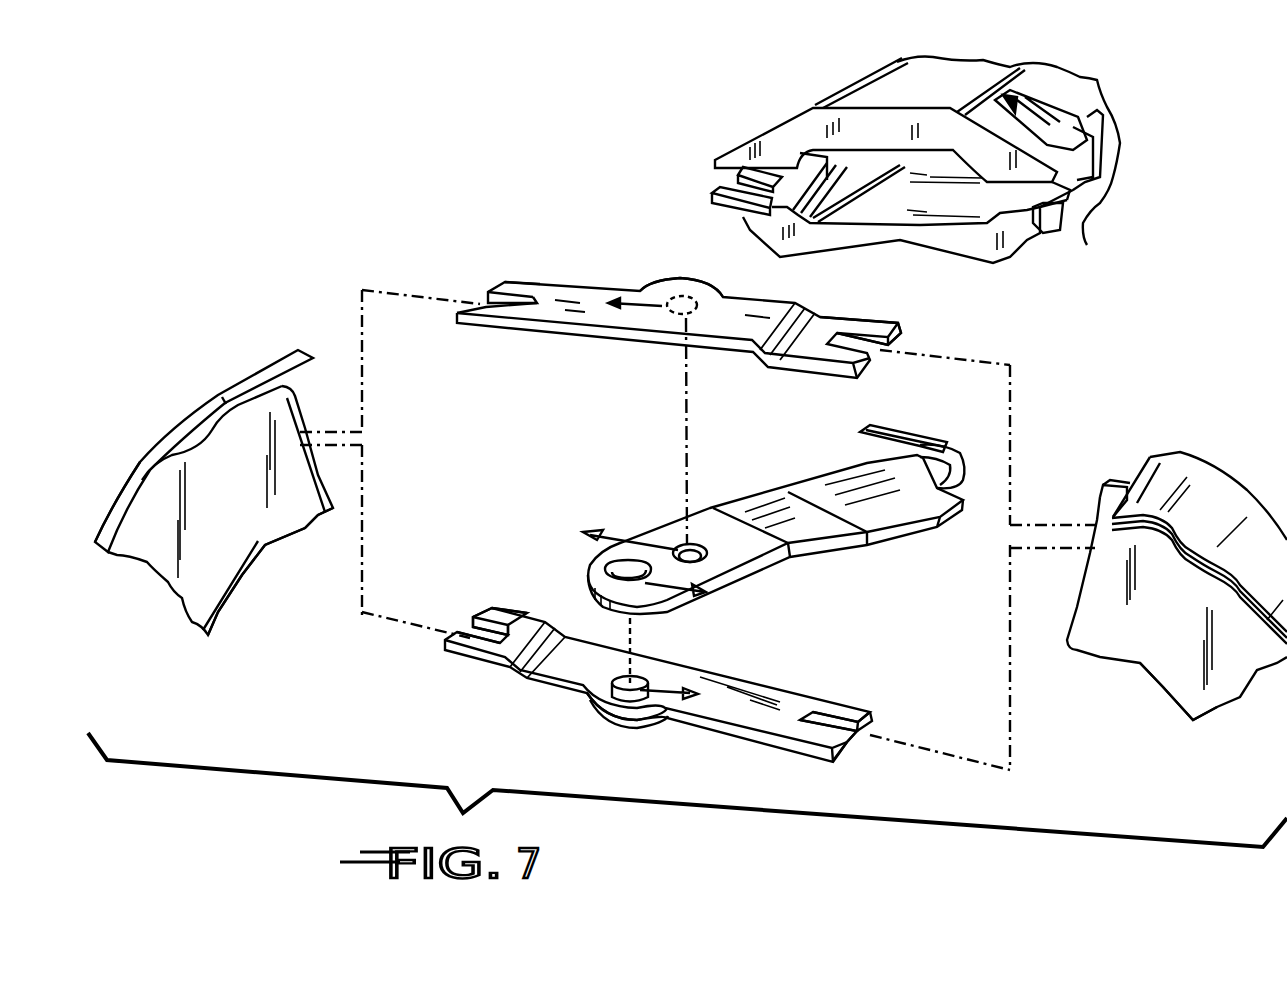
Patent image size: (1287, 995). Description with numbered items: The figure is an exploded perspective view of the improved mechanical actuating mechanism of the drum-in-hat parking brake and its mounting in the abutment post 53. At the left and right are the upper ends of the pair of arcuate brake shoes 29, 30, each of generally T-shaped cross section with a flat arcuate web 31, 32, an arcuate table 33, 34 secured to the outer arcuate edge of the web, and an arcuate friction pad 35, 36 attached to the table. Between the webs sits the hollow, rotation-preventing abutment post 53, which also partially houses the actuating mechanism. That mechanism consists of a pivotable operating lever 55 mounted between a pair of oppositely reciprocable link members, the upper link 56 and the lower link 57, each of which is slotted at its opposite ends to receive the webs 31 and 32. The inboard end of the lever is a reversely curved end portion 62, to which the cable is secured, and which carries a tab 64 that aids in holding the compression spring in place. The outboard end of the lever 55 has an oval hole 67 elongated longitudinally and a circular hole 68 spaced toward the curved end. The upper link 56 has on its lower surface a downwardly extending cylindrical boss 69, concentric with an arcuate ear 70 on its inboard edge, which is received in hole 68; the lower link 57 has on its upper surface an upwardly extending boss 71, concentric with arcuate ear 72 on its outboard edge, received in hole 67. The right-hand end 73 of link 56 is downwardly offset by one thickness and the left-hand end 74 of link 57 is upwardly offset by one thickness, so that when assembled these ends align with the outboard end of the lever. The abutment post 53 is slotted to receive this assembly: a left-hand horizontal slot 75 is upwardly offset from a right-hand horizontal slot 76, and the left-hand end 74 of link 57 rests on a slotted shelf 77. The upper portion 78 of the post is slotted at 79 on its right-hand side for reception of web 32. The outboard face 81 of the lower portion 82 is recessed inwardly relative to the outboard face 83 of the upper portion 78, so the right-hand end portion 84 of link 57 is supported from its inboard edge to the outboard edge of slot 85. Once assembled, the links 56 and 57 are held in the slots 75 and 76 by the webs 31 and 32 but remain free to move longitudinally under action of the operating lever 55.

The arcuate brake shoe 29 is at (238, 592).
The arcuate brake shoe 30 is at (1183, 690).
The flat arcuate web 31 is at (251, 516).
The flat arcuate web 32 is at (1186, 630).
The arcuate table 33 is at (112, 552).
The arcuate table 34 is at (1140, 470).
The arcuate friction pad 35 is at (267, 368).
The arcuate friction pad 36 is at (1215, 465).
The abutment post 53 is at (847, 87).
The operating lever 55 is at (827, 553).
The upper link 56 is at (590, 288).
The lower link 57 is at (732, 737).
The reversely curved inboard end portion 62 is at (957, 460).
The tab 64 is at (863, 427).
The oval hole 67 is at (587, 562).
The circular hole 68 is at (677, 550).
The cylindrical stud or boss 69 is at (670, 320).
The arcuate ear 70 is at (680, 278).
The cylindrical stud or boss 71 is at (593, 690).
The arcuate ear 72 is at (613, 732).
The right-hand end of link 56 73 is at (850, 320).
The left-hand end of link 57 74 is at (507, 618).
The left-hand horizontal slot 75 is at (738, 178).
The right-hand horizontal slot 76 is at (980, 193).
The slotted shelf 77 is at (712, 200).
The upper portion of abutment post 78 is at (1053, 63).
The slot 79 is at (1100, 108).
The outboard face of lower portion 81 is at (833, 233).
The lower portion of abutment post 82 is at (1087, 245).
The outboard face of upper portion 83 is at (902, 143).
The right-hand end portion of link 57 84 is at (847, 713).
The slot 85 is at (852, 737).